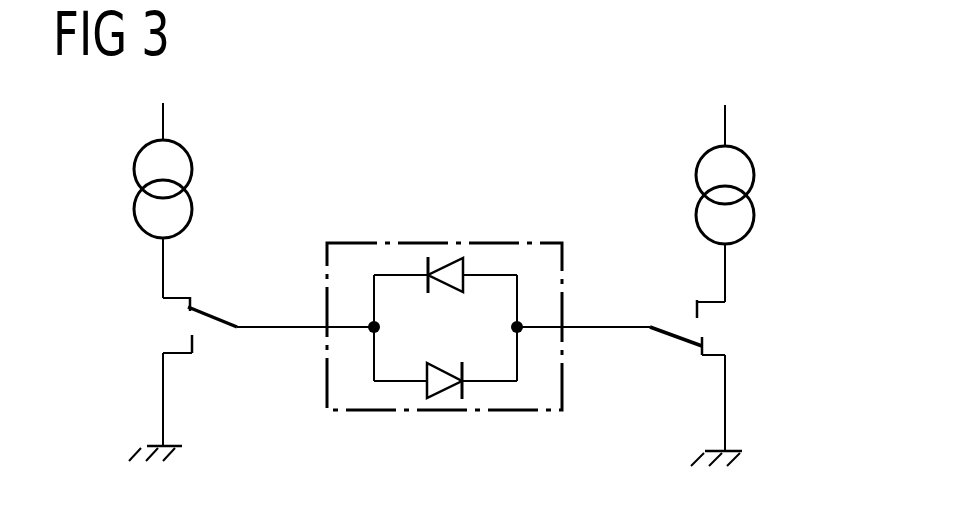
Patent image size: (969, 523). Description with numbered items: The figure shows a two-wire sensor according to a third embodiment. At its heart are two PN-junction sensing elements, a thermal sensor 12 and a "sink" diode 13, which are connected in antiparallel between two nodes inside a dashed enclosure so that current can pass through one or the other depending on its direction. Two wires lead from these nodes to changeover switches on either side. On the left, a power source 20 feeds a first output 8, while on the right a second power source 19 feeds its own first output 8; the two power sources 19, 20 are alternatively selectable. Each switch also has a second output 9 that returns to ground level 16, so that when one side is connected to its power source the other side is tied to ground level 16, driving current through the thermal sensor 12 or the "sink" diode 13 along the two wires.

The power source 20 is at (133, 168).
The power source 19 is at (757, 172).
The first output 8 is at (203, 291).
The second output 9 is at (193, 348).
The ground level 16 is at (160, 444).
The "sink" diode 13 is at (444, 262).
The thermal sensor 12 is at (450, 393).